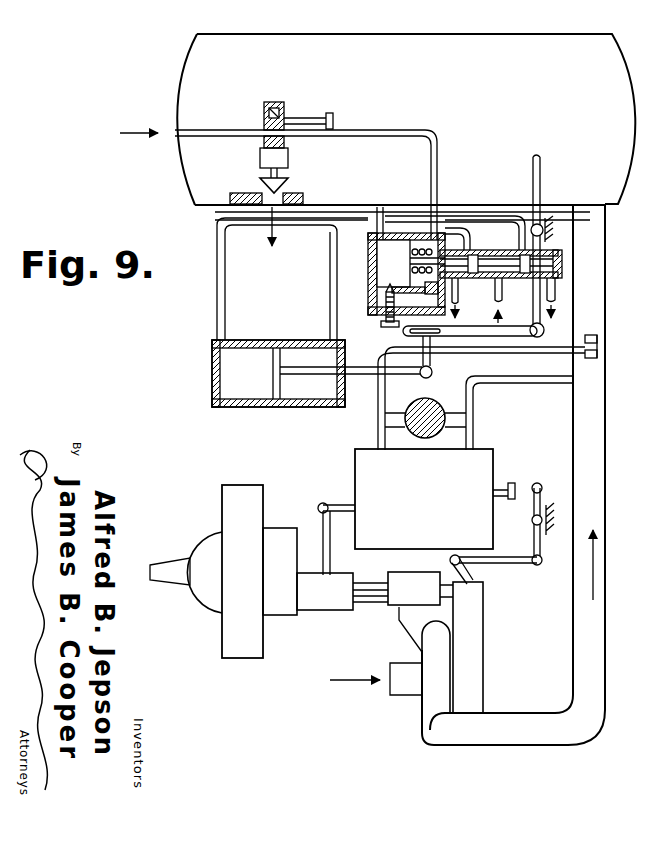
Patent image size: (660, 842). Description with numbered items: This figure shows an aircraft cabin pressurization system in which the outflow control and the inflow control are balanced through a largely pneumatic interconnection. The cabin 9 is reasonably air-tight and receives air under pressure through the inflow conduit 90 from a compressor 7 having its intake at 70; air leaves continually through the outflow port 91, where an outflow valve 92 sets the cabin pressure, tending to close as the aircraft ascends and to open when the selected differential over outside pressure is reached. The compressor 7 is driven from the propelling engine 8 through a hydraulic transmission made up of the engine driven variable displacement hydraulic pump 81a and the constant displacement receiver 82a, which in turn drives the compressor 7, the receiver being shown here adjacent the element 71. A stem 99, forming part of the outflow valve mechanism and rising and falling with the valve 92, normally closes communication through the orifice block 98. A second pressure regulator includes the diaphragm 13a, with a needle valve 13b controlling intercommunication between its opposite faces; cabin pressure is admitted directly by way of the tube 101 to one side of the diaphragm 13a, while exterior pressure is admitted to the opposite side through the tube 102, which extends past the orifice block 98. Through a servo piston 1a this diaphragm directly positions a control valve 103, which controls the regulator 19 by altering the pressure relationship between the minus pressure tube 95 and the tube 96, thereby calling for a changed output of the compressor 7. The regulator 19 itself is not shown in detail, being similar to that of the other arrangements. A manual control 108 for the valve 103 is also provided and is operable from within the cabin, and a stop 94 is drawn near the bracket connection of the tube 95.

The cabin 9 is at (388, 36).
The orifice block 98 is at (281, 103).
The tube 102 is at (383, 128).
The stem 99 is at (288, 142).
The outflow valve 92 is at (262, 180).
The outflow port 91 is at (270, 212).
The tube 101 is at (383, 206).
The manual control 108 is at (533, 181).
The diaphragm 13a is at (410, 252).
The needle valve 13b is at (385, 322).
The stop 94 is at (595, 338).
The tube 95 is at (560, 352).
The servo piston 1a is at (279, 403).
The control valve 103 is at (388, 415).
The tube 96 is at (521, 382).
The regulator 19 is at (478, 462).
The constant displacement receiver 82a is at (421, 580).
The inflow conduit 90 is at (605, 525).
The propelling engine 8 is at (212, 605).
The variable displacement hydraulic pump 81a is at (338, 610).
The compressor 7 is at (435, 655).
The housing 71 is at (472, 685).
The intake 70 is at (400, 692).